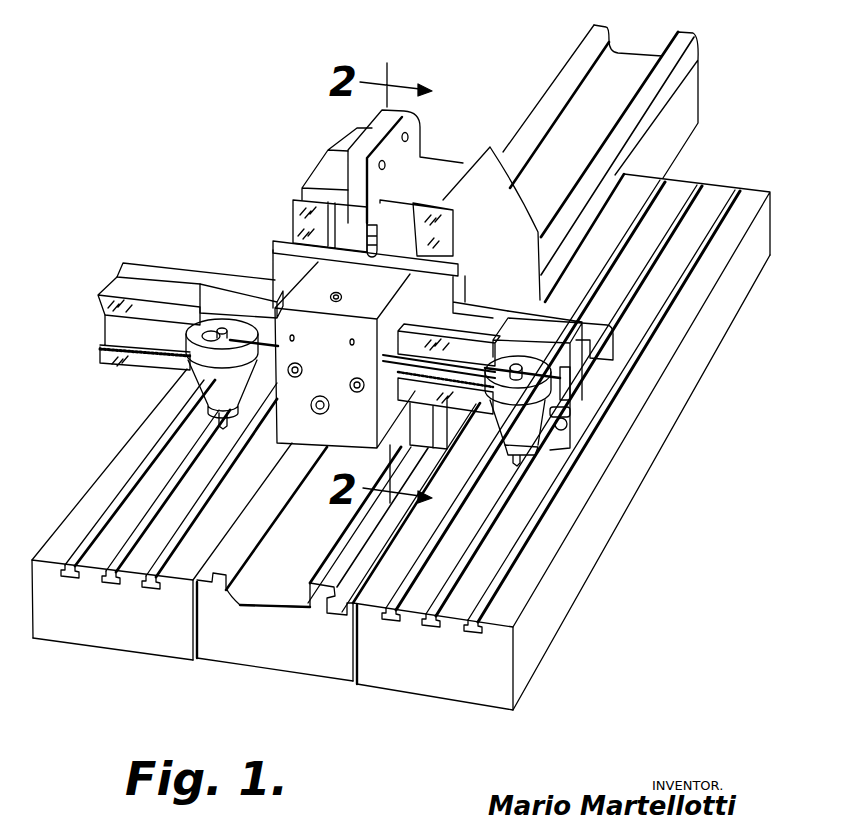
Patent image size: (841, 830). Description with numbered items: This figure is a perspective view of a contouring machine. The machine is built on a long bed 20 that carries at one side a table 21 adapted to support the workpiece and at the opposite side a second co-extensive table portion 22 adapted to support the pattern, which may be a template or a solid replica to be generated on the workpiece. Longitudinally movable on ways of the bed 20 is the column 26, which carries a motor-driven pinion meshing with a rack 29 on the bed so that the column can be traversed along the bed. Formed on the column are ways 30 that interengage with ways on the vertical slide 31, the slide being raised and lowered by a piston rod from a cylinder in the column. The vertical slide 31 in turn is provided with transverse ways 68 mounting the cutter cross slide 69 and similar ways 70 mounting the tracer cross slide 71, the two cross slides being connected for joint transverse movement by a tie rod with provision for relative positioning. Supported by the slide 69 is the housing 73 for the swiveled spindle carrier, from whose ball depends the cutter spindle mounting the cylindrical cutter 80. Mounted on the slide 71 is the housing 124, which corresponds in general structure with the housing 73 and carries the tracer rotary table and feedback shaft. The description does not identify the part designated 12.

The tool slide housing block 12 is at (340, 443).
The bed 20 is at (328, 668).
The table 21 is at (103, 642).
The second co-extensive table portion 22 is at (617, 510).
The column 26 is at (490, 147).
The rack 29 is at (327, 555).
The ways 30 is at (297, 207).
The vertical slide 31 is at (293, 241).
The transverse ways 68 is at (100, 348).
The cutter cross slide 69 is at (215, 292).
The ways 70 is at (572, 412).
The tracer cross slide 71 is at (585, 342).
The housing 73 is at (200, 377).
The cylindrical cutter 80 is at (217, 425).
The housing 124 is at (545, 445).